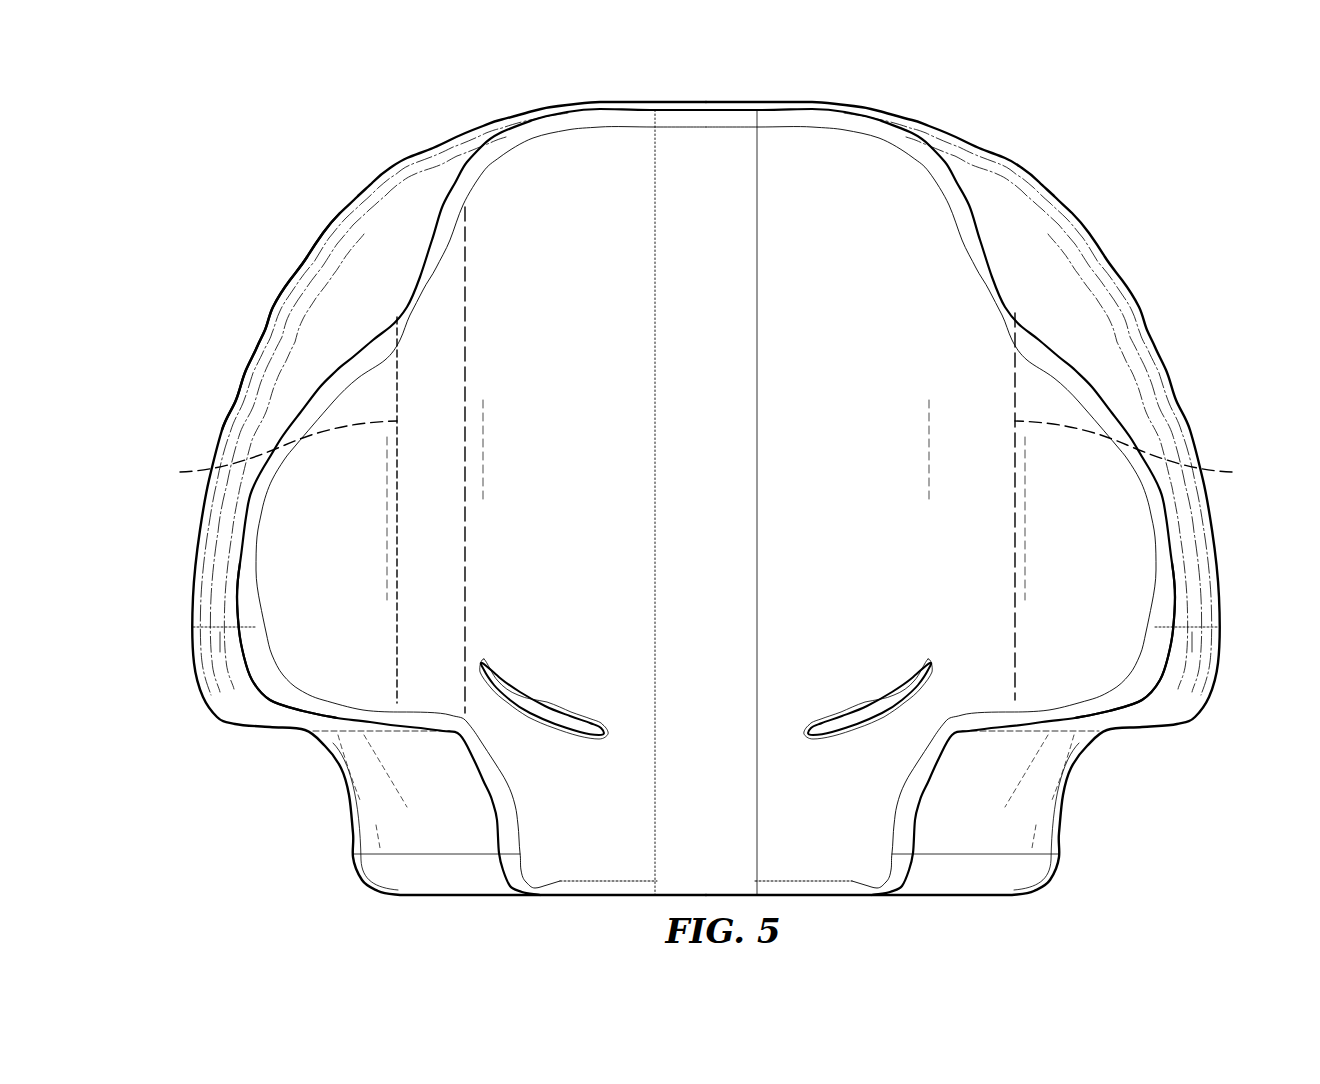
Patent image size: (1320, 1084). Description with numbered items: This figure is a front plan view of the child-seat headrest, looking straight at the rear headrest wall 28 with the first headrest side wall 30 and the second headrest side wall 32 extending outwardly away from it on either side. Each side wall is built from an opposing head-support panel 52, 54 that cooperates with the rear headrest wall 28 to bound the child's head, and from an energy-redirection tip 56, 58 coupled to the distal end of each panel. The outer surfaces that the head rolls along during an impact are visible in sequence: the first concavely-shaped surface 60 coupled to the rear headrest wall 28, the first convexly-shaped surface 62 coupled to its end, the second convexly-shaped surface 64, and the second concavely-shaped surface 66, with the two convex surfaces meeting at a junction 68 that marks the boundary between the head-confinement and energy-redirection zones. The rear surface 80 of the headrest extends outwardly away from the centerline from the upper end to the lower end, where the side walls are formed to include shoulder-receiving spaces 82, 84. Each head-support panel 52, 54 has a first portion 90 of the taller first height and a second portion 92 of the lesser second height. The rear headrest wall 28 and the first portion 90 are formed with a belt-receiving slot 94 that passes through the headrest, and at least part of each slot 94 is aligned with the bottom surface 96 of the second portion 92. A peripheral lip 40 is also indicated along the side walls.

The rear headrest wall 28 is at (712, 100).
The first headrest side wall 30 is at (290, 272).
The second headrest side wall 32 is at (1179, 371).
The peripheral lip 40 is at (200, 552).
The head-support panel 52 is at (411, 282).
The head-support panel 54 is at (996, 284).
The energy-redirection tip 56 is at (249, 678).
The energy-redirection tip 58 is at (1156, 649).
The first concavely-shaped surface 60 is at (533, 180).
The first convexly-shaped surface 62 is at (430, 583).
The second convexly-shaped surface 64 is at (383, 630).
The second concavely-shaped surface 66 is at (270, 600).
The junction 68 is at (183, 472).
The rear surface 80 is at (247, 378).
The shoulder-receiving space 82 is at (306, 804).
The shoulder-receiving space 84 is at (1096, 791).
The first portion 90 is at (495, 216).
The second portion 92 is at (450, 283).
The belt-receiving slot 94 is at (546, 684).
The bottom surface 96 is at (370, 730).